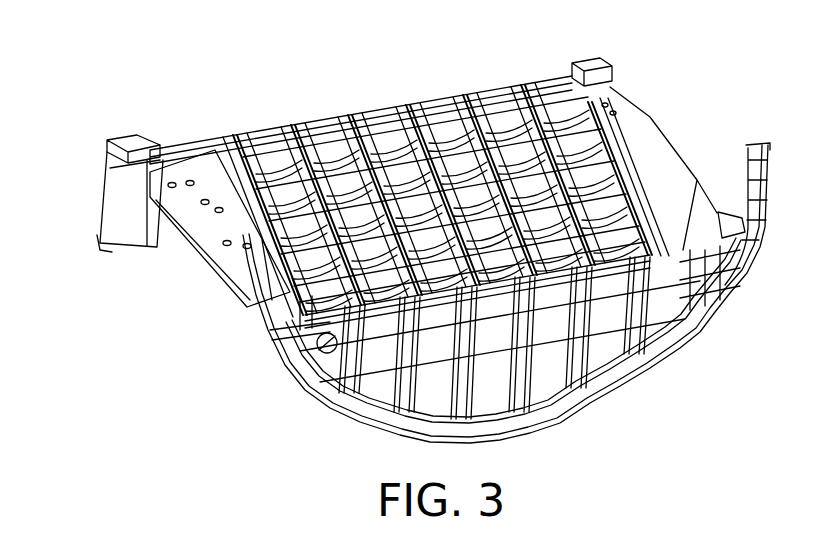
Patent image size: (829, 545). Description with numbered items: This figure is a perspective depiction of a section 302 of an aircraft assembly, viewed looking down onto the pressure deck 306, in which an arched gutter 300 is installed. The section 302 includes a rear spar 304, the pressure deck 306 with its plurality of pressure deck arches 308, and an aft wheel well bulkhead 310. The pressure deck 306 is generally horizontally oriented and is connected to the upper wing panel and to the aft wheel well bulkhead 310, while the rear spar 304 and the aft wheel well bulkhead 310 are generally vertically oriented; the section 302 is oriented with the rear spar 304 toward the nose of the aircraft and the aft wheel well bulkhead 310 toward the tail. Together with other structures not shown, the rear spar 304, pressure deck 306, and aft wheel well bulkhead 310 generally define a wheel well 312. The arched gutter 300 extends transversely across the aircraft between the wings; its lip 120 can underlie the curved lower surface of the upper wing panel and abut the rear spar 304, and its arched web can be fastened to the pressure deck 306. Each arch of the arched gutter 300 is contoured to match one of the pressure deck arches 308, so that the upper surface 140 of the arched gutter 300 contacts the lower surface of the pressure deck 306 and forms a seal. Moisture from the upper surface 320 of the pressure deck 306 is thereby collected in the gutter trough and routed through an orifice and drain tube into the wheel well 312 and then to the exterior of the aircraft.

The section 302 is at (103, 113).
The arched gutter 300 is at (210, 143).
The lip 120 is at (230, 140).
The pressure deck arches 308 is at (262, 122).
The upper surface 140 is at (507, 100).
The pressure deck 306 is at (647, 140).
The upper surface 320 is at (673, 162).
The rear spar 304 is at (115, 240).
The wheel well 312 is at (197, 302).
The aft wheel well bulkhead 310 is at (327, 378).